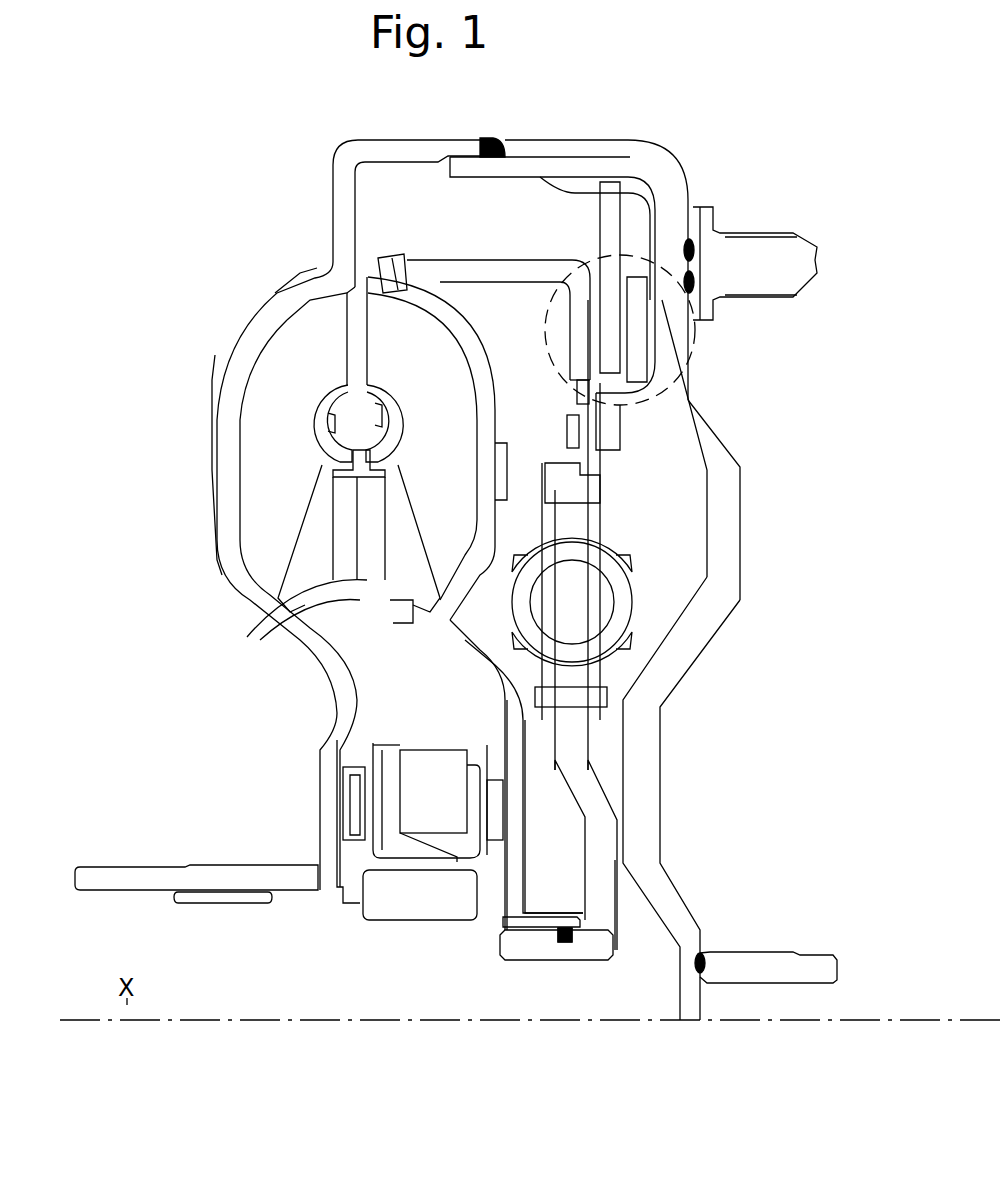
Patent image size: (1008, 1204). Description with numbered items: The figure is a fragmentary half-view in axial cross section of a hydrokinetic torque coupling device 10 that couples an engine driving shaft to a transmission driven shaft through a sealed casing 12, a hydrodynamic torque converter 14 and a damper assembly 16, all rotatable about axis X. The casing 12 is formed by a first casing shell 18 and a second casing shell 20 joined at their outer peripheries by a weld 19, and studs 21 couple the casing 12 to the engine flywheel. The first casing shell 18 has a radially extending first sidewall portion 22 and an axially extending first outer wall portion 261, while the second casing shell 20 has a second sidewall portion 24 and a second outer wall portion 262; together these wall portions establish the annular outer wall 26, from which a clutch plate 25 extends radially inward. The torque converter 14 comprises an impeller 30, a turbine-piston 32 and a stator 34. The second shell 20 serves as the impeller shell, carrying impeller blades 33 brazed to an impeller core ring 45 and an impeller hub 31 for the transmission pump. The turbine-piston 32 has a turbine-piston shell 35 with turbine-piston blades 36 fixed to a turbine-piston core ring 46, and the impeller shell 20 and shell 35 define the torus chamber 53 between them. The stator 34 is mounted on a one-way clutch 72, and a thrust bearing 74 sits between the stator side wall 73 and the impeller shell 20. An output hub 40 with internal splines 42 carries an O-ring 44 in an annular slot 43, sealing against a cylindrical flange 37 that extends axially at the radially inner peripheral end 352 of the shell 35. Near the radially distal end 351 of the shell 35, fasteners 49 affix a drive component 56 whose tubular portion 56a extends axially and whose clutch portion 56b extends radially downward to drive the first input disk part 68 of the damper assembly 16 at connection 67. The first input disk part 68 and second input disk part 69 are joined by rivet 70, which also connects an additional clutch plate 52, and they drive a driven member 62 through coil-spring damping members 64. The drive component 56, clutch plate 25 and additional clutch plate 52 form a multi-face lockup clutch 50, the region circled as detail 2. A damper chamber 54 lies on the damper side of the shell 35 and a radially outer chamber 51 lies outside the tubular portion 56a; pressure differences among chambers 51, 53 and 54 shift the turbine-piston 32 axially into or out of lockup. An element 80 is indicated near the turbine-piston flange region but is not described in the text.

The hydrokinetic torque coupling device 10 is at (336, 122).
The sealed casing 12 is at (654, 124).
The hydrodynamic torque converter 14 is at (212, 322).
The damper assembly 16 is at (642, 466).
The first casing shell 18 is at (725, 517).
The weld 19 is at (492, 137).
The second casing shell 20 is at (348, 163).
The studs 21 is at (760, 248).
The first sidewall portion 22 is at (688, 243).
The second sidewall portion 24 is at (340, 215).
The clutch plate 25 is at (606, 233).
The annular outer wall 26 is at (541, 124).
The first outer wall portion 261 is at (598, 150).
The second outer wall portion 262 is at (415, 150).
The impeller 30 is at (176, 456).
The impeller hub 31 is at (220, 878).
The turbine-piston 32 is at (494, 349).
The impeller blades 33 is at (290, 502).
The stator 34 is at (247, 637).
The turbine-piston shell 35 is at (485, 430).
The radially distal end 351 is at (380, 290).
The radially inner peripheral end 352 is at (553, 903).
The turbine-piston blades 36 is at (458, 502).
The cylindrical flange 37 is at (537, 922).
The output hub 40 is at (523, 943).
The internal splines 42 is at (603, 955).
The annular slot 43 is at (565, 945).
The O-ring 44 is at (565, 935).
The impeller core ring 45 is at (332, 393).
The turbine-piston core ring 46 is at (390, 398).
The fasteners 49 is at (400, 285).
The multi-face lockup clutch 50 is at (665, 372).
The radially outer chamber 51 is at (520, 212).
The additional clutch plate 52 is at (645, 345).
The torus chamber 53 is at (340, 448).
The damper chamber 54 is at (668, 603).
The drive component 56 is at (468, 302).
The tubular portion 56a is at (450, 270).
The clutch portion 56b is at (580, 306).
The driven member 62 is at (583, 782).
The elastic damping members 64 is at (618, 582).
The connection 67 is at (577, 392).
The first input disk part 68 is at (550, 472).
The second input disk part 69 is at (598, 495).
The rivet 70 is at (567, 425).
The one-way clutch 72 is at (430, 765).
The side wall 73 is at (378, 758).
The thrust bearing 74 is at (355, 803).
The wall 80 is at (522, 826).
The section detail 2 is at (698, 355).